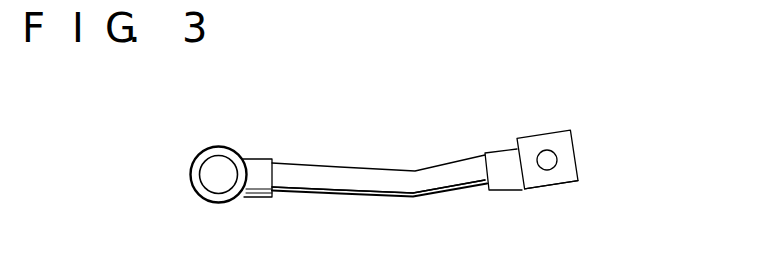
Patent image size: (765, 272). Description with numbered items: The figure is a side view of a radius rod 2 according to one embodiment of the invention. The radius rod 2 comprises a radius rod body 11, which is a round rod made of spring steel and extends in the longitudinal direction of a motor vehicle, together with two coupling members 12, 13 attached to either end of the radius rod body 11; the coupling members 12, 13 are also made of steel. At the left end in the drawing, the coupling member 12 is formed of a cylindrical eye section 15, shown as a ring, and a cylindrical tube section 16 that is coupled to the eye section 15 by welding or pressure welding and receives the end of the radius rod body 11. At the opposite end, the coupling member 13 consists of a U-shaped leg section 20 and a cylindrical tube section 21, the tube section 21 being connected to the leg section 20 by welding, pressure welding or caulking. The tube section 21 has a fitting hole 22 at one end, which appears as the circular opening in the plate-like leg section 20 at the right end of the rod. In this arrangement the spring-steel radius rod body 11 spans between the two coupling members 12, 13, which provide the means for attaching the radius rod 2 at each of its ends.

The radius rod 2 is at (415, 159).
The radius rod body 11 is at (373, 189).
The coupling member 12 is at (241, 159).
The coupling member 13 is at (541, 133).
The cylindrical eye section 15 is at (191, 185).
The cylindrical tube section 16 is at (258, 189).
The U-shaped leg section 20 is at (572, 173).
The cylindrical tube section 21 is at (492, 191).
The fitting hole 22 is at (557, 158).